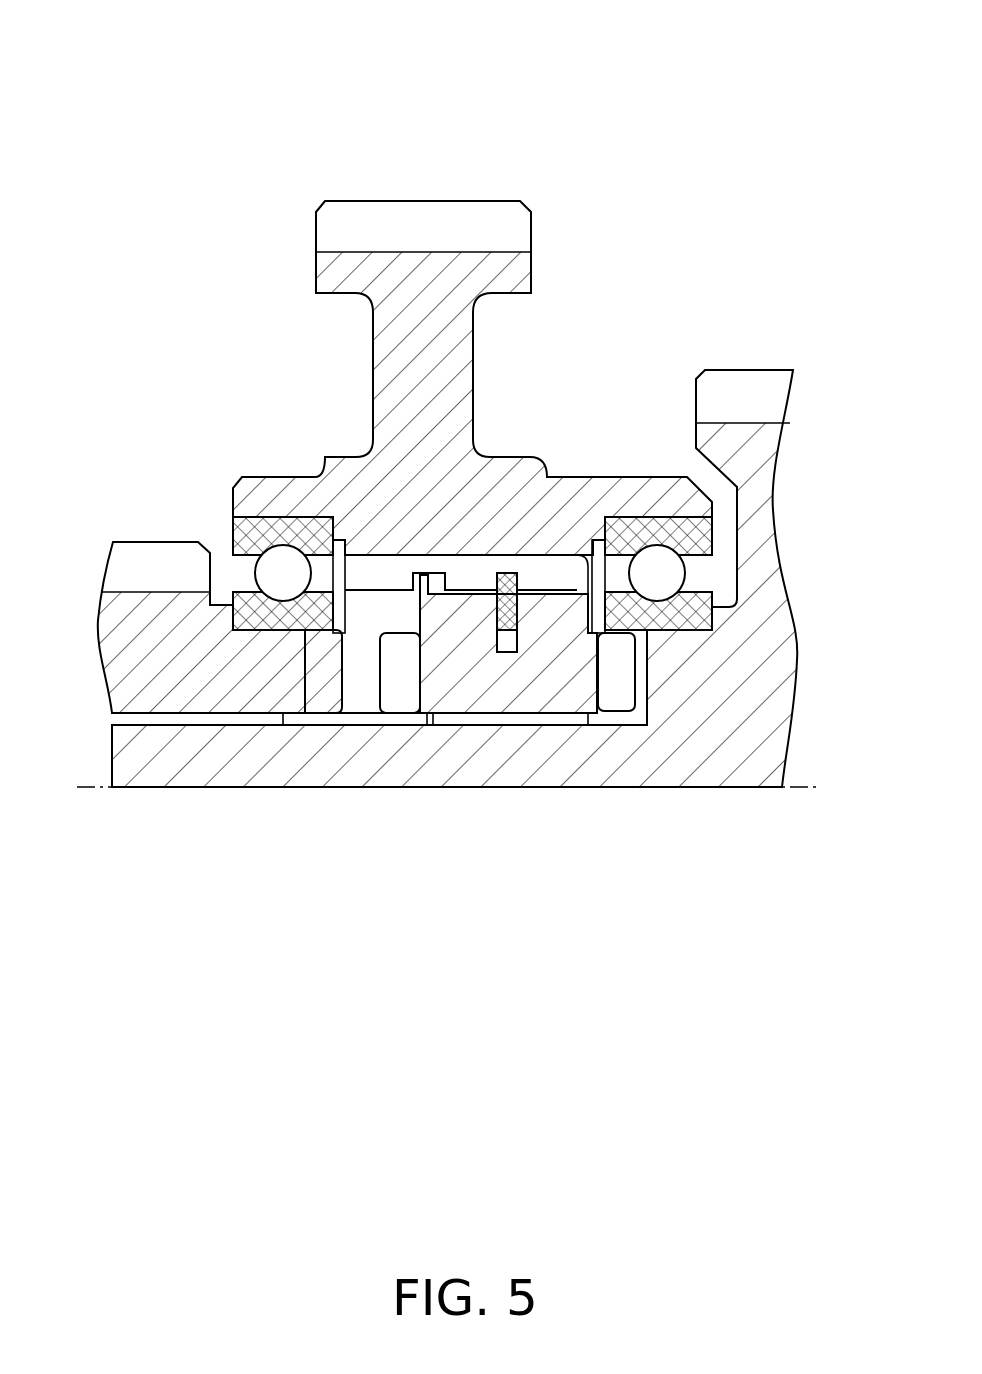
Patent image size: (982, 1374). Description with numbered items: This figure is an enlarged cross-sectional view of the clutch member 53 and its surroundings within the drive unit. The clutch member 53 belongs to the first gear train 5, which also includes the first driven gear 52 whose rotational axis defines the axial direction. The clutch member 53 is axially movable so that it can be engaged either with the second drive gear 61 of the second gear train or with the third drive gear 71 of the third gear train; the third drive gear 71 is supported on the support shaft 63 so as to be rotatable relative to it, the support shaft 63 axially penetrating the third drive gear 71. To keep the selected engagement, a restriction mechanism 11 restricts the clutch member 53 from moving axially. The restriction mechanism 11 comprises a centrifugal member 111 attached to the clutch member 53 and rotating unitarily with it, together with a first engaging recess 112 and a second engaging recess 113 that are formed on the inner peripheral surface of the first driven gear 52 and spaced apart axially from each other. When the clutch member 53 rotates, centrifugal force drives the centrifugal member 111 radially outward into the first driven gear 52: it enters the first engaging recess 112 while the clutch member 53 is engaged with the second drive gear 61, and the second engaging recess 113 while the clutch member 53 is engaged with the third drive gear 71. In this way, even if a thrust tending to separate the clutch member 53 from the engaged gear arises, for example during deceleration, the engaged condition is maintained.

The first gear train 5 is at (422, 157).
The first driven gear 52 is at (373, 326).
The clutch member 53 is at (568, 605).
The second drive gear 61 is at (765, 446).
The support shaft 63 is at (187, 777).
The third drive gear 71 is at (100, 600).
The restriction mechanism 11 is at (465, 752).
The centrifugal member 111 is at (485, 620).
The first engaging recess 112 is at (553, 717).
The second engaging recess 113 is at (427, 600).